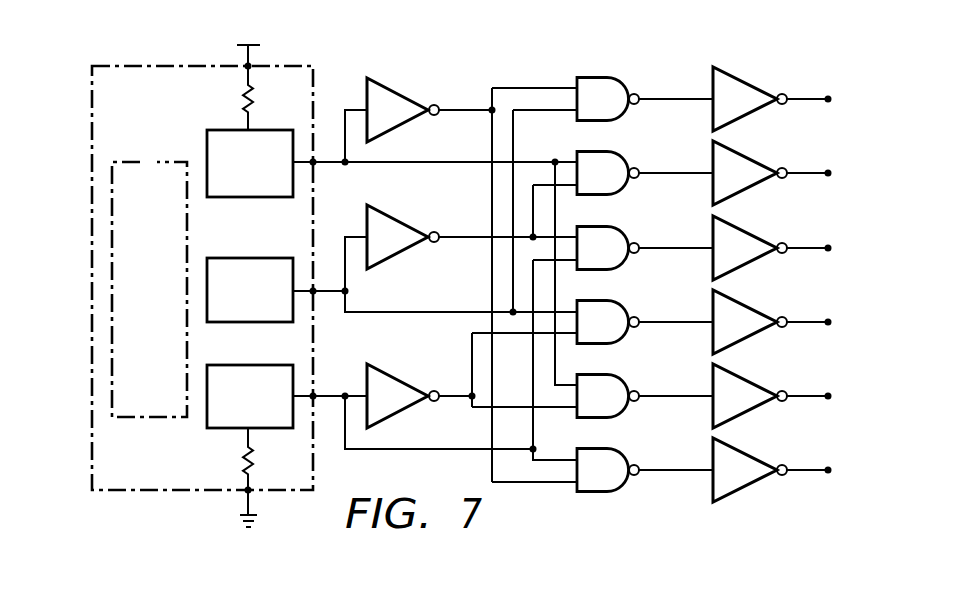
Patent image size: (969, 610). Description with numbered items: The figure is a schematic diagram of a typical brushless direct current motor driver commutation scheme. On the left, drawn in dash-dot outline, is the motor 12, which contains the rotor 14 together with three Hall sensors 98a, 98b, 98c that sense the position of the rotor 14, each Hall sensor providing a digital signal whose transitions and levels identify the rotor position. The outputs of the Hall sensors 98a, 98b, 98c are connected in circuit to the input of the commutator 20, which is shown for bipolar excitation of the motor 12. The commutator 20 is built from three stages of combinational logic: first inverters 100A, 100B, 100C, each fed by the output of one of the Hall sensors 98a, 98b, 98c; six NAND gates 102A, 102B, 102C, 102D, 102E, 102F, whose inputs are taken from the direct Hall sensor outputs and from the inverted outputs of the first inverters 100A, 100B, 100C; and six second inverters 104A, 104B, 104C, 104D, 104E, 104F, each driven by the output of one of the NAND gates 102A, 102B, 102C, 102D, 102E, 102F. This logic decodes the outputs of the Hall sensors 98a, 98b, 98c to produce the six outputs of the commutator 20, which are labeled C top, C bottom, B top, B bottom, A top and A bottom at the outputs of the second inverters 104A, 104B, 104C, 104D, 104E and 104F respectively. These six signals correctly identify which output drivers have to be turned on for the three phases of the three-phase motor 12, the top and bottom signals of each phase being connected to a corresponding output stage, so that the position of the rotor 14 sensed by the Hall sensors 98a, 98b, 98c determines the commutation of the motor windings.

The motor 12 is at (90, 78).
The rotor 14 is at (153, 162).
The commutator 20 is at (579, 39).
The Hall sensor 98a is at (230, 128).
The Hall sensor 98b is at (230, 258).
The Hall sensor 98c is at (230, 430).
The first inverter 100A is at (398, 90).
The first inverter 100B is at (398, 218).
The first inverter 100C is at (398, 377).
The NAND gate 102A is at (627, 84).
The NAND gate 102B is at (627, 158).
The NAND gate 102C is at (627, 233).
The NAND gate 102D is at (627, 307).
The NAND gate 102E is at (627, 381).
The NAND gate 102F is at (627, 455).
The second inverter 104A is at (757, 84).
The second inverter 104B is at (757, 158).
The second inverter 104C is at (757, 233).
The second inverter 104D is at (757, 307).
The second inverter 104E is at (757, 381).
The second inverter 104F is at (757, 455).